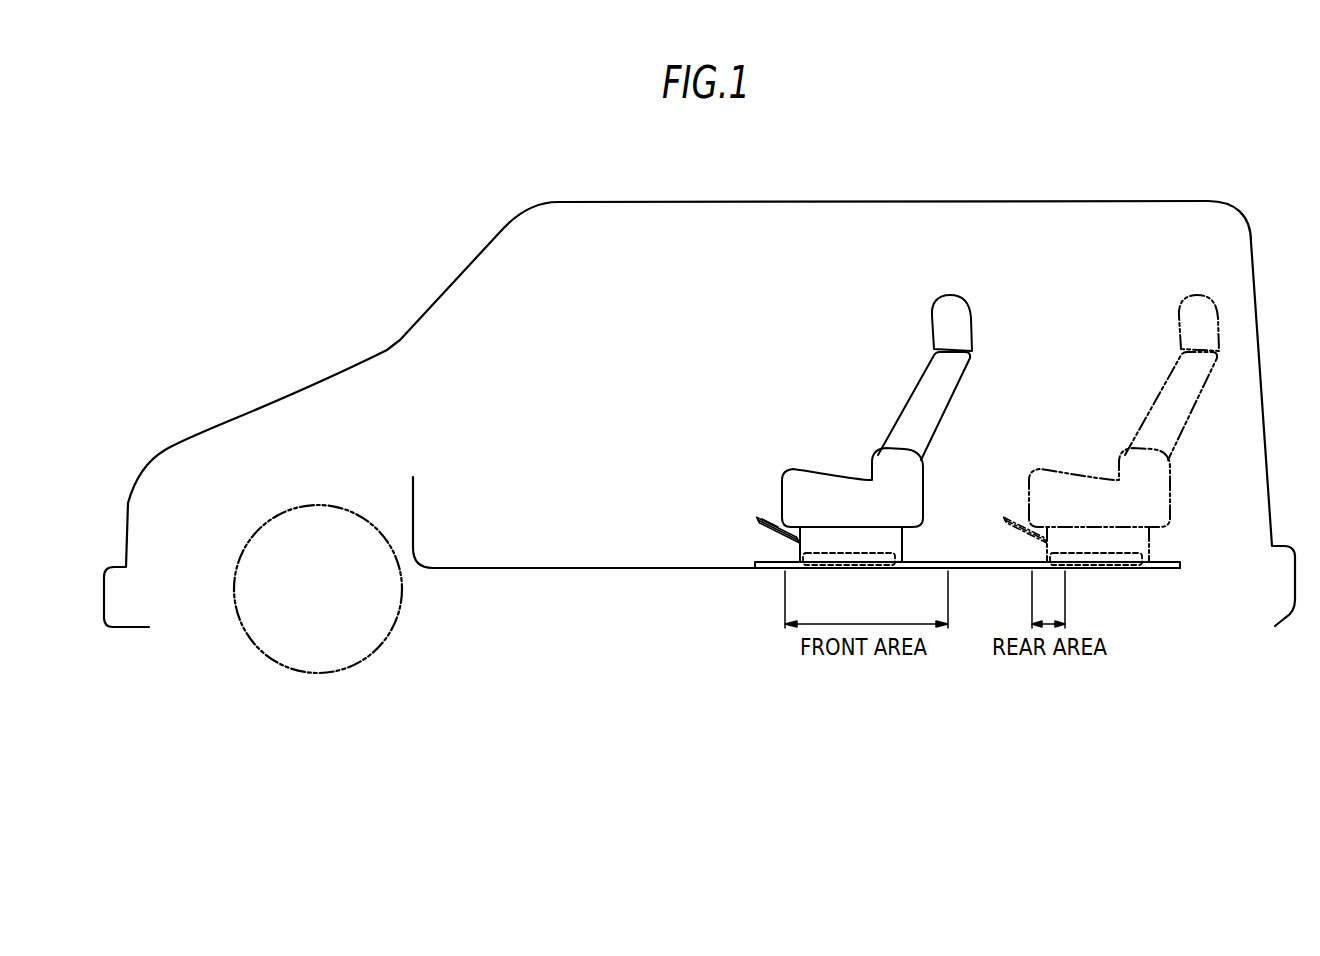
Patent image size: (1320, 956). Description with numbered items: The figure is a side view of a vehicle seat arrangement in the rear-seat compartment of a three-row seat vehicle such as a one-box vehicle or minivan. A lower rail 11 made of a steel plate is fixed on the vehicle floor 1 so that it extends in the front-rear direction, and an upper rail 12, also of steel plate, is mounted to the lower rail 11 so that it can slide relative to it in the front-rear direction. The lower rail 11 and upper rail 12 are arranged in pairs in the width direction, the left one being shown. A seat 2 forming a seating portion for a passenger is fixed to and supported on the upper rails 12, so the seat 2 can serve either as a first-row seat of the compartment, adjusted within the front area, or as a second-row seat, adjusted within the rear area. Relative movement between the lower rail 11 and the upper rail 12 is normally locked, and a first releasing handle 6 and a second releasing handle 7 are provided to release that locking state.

The vehicle floor 1 is at (617, 567).
The seat 2 is at (955, 392).
The first releasing handle 6 is at (758, 526).
The second releasing handle 7 is at (771, 517).
The lower rail 11 is at (1166, 561).
The upper rail 12 is at (888, 547).